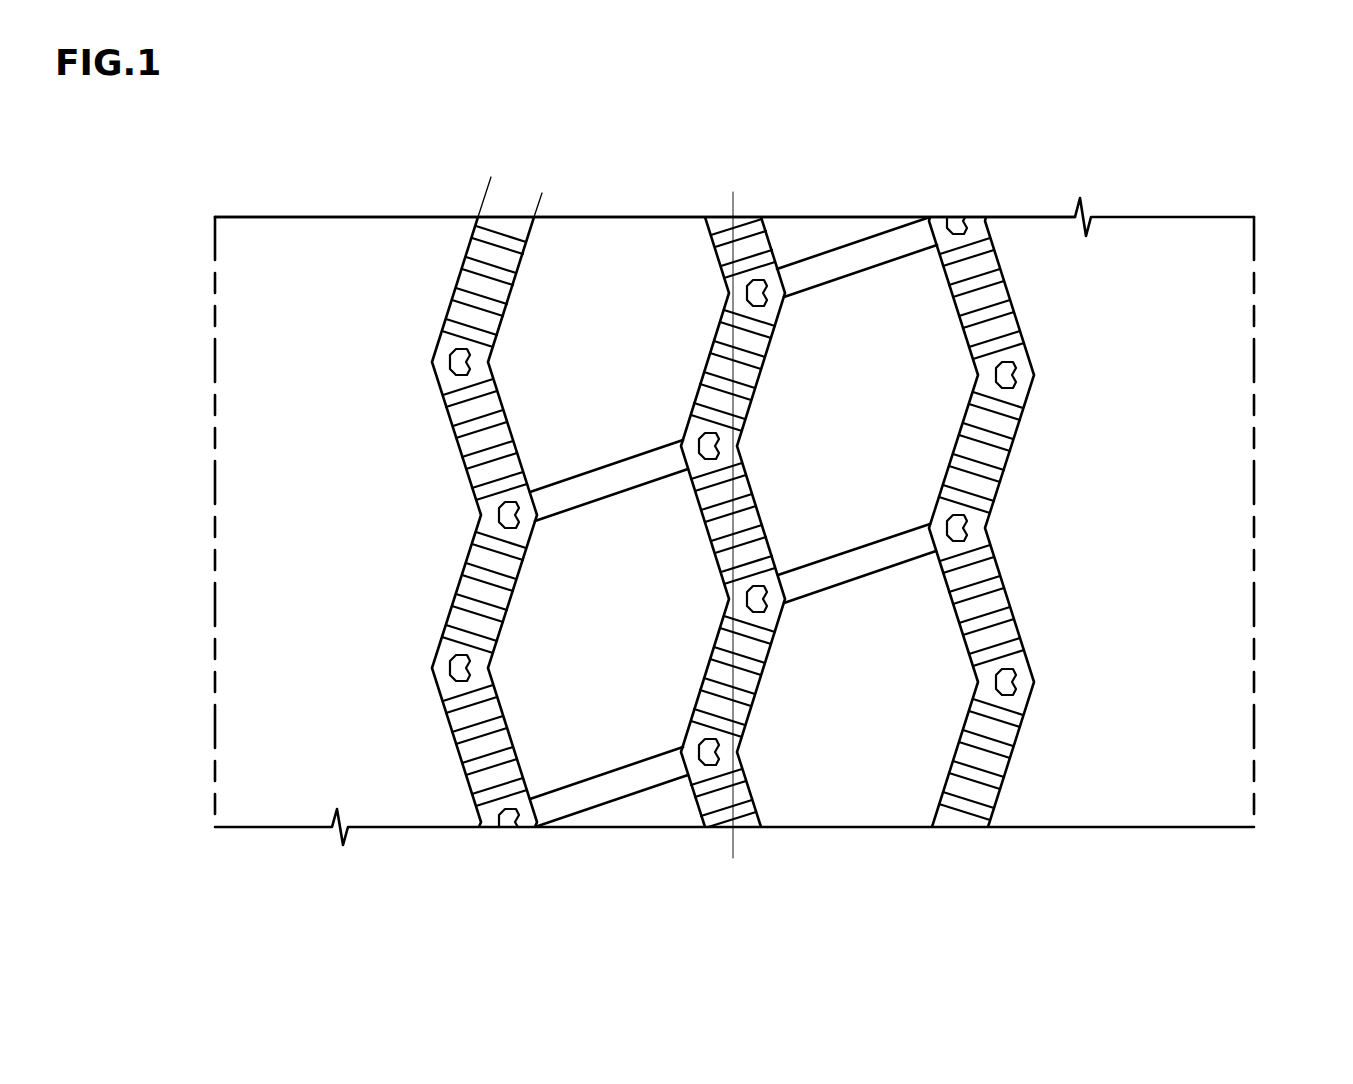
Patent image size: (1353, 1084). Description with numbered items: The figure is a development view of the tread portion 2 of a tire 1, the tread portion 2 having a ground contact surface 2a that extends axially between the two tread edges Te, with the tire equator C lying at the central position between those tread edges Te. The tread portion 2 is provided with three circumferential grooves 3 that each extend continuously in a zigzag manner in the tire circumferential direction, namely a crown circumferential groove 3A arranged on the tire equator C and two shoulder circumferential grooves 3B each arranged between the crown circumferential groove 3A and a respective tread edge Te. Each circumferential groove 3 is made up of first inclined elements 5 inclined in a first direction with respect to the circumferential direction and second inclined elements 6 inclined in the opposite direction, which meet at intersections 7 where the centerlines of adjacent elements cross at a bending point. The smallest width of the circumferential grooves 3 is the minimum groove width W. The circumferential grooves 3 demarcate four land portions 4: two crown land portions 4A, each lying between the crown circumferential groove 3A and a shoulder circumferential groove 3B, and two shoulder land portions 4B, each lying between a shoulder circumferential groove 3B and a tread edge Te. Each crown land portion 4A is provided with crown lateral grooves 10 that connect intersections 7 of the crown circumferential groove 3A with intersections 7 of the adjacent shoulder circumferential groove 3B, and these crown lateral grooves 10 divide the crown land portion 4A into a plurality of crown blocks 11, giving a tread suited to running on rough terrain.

The tire 1 is at (1193, 178).
The tread portion 2 is at (1117, 202).
The ground contact surface 2a is at (355, 250).
The tread edge Te is at (213, 244).
The tire equator C is at (733, 509).
The circumferential groove 3 is at (1003, 130).
The crown circumferential groove 3A is at (757, 245).
The shoulder circumferential groove 3B is at (488, 252).
The minimum groove width W is at (490, 182).
The land portion 4 is at (1062, 910).
The crown land portion 4A is at (645, 720).
The shoulder land portion 4B is at (395, 752).
The first inclined element 5 is at (707, 358).
The second inclined element 6 is at (760, 512).
The intersection 7 is at (737, 445).
The crown lateral groove 10 is at (603, 483).
The crown block 11 is at (937, 382).